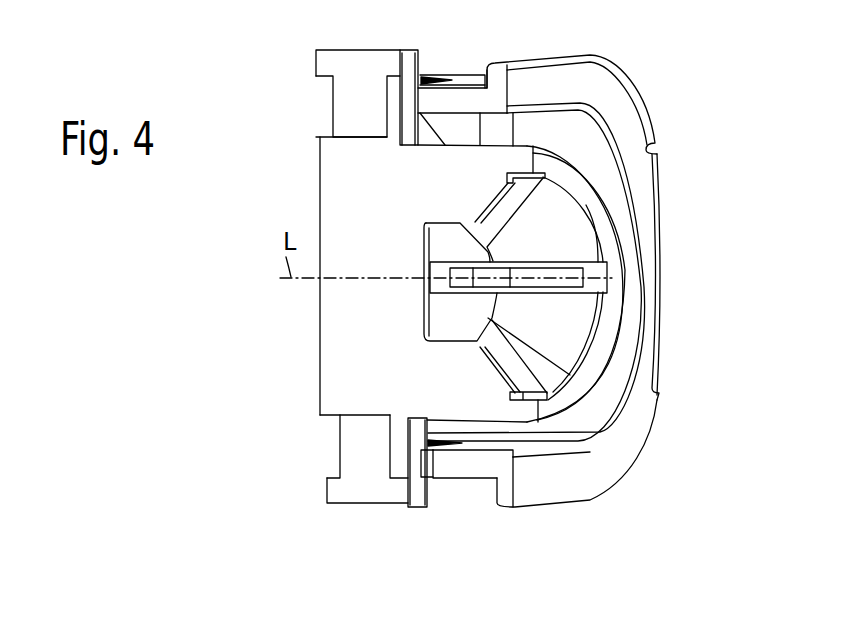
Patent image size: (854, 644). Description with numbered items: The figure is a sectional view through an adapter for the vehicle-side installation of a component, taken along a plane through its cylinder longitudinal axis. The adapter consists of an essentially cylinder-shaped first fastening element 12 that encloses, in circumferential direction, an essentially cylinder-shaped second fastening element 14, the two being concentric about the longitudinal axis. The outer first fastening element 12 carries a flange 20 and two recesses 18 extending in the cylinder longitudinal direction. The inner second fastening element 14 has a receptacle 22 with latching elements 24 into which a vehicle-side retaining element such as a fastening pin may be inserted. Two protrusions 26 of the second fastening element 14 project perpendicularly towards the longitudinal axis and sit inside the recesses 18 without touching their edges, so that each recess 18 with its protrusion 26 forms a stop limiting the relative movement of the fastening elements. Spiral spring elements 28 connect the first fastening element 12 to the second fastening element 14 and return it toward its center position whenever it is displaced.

The first fastening element 12 is at (496, 90).
The second fastening element 14 is at (330, 166).
The recesses 18 is at (433, 79).
The flange 20 is at (600, 75).
The receptacle 22 is at (592, 282).
The latching elements 24 is at (570, 230).
The protrusions 26 is at (373, 63).
The spring elements 28 is at (481, 141).